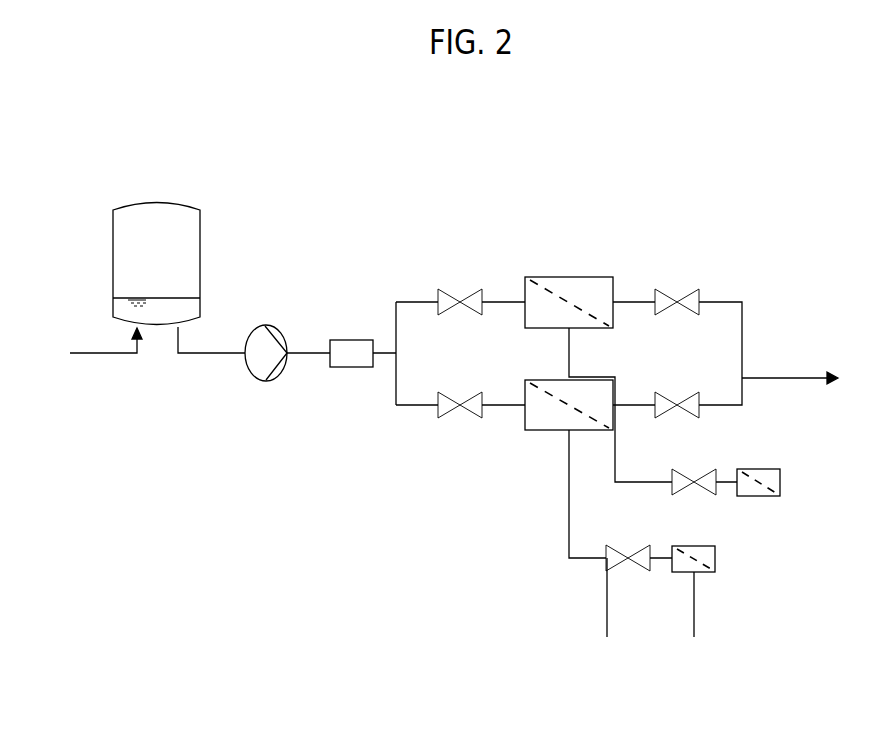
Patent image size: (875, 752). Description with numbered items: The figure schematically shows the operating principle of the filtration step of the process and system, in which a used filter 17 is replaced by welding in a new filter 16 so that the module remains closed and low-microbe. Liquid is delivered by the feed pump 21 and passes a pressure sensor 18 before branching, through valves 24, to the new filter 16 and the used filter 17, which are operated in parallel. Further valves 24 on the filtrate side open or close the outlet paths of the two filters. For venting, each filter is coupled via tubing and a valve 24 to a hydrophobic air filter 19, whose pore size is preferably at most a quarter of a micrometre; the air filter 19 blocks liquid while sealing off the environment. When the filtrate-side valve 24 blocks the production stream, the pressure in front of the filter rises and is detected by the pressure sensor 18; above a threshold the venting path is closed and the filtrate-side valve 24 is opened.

The new filter 16 is at (569, 277).
The used filter 17 is at (525, 430).
The pressure sensor 18 is at (341, 340).
The air filter 19 is at (759, 496).
The feed pump 21 is at (266, 325).
The valve 24 is at (438, 302).